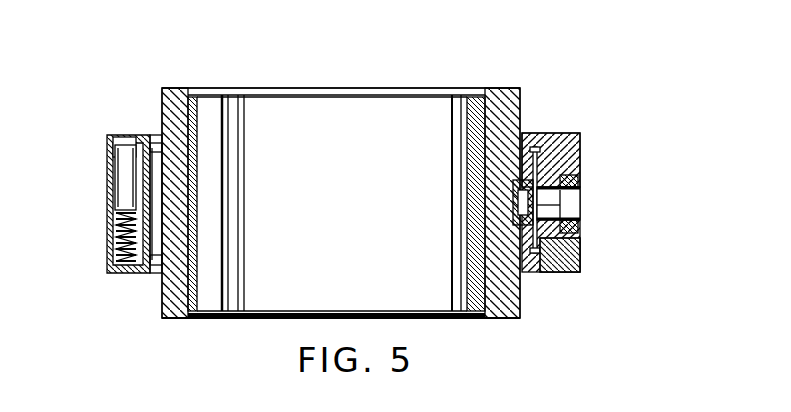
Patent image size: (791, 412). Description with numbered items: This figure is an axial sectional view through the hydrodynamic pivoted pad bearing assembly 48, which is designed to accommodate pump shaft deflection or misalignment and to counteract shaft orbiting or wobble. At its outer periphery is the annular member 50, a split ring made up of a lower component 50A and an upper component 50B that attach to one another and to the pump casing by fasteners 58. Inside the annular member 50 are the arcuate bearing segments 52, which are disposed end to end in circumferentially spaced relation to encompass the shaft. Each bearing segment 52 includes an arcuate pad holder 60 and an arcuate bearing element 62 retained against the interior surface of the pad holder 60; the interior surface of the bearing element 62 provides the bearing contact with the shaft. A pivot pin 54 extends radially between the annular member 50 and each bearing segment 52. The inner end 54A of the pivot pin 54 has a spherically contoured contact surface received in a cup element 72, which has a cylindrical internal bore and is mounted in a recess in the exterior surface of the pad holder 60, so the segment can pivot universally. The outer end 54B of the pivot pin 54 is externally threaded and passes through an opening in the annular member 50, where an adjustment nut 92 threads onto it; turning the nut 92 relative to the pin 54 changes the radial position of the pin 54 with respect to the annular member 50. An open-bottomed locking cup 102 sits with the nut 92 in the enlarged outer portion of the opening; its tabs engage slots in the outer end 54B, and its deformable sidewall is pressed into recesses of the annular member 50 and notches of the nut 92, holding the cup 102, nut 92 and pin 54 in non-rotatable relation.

The pivoted pad bearing assembly 48 is at (558, 61).
The annular member 50 is at (568, 125).
The lower component 50A is at (580, 265).
The upper component 50B is at (580, 137).
The arcuate bearing segment 52 is at (156, 295).
The pivot pin 54 is at (569, 197).
The pivot pin inner end 54A is at (513, 205).
The pivot pin outer end 54B is at (560, 205).
The fastener 58 is at (127, 182).
The arcuate pad holder 60 is at (177, 309).
The arcuate bearing element 62 is at (200, 270).
The cup element 72 is at (513, 182).
The adjustment nut 92 is at (578, 227).
The locking cup 102 is at (580, 172).